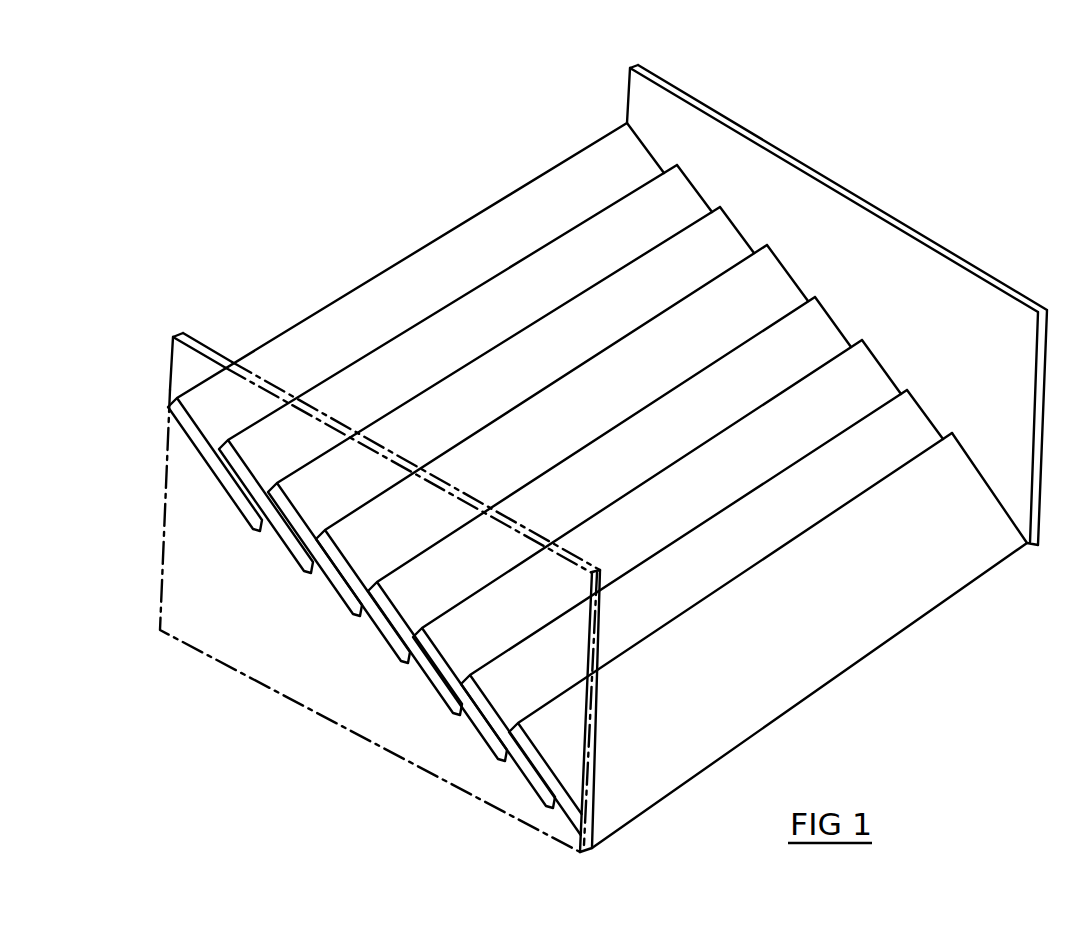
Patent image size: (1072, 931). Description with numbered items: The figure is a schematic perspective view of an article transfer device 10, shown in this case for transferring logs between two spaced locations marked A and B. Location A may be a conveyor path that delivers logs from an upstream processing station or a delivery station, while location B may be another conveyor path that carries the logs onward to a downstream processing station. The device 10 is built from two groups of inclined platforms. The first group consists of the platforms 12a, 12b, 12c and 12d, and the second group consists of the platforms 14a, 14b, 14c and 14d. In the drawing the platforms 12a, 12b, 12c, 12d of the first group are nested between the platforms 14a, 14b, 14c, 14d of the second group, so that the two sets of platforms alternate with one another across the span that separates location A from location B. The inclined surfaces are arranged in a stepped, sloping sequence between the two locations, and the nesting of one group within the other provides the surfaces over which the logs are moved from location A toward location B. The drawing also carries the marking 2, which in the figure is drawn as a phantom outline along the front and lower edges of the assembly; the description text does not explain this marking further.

The article transfer device 10 is at (481, 106).
The inclined platform 12a is at (742, 562).
The inclined platform 12b is at (647, 464).
The inclined platform 12c is at (557, 362).
The inclined platform 12d is at (481, 267).
The inclined platform 14a is at (793, 634).
The inclined platform 14b is at (686, 511).
The inclined platform 14c is at (598, 411).
The inclined platform 14d is at (517, 316).
The phantom reference plane 2 is at (308, 722).
The location A is at (874, 702).
The location B is at (366, 190).